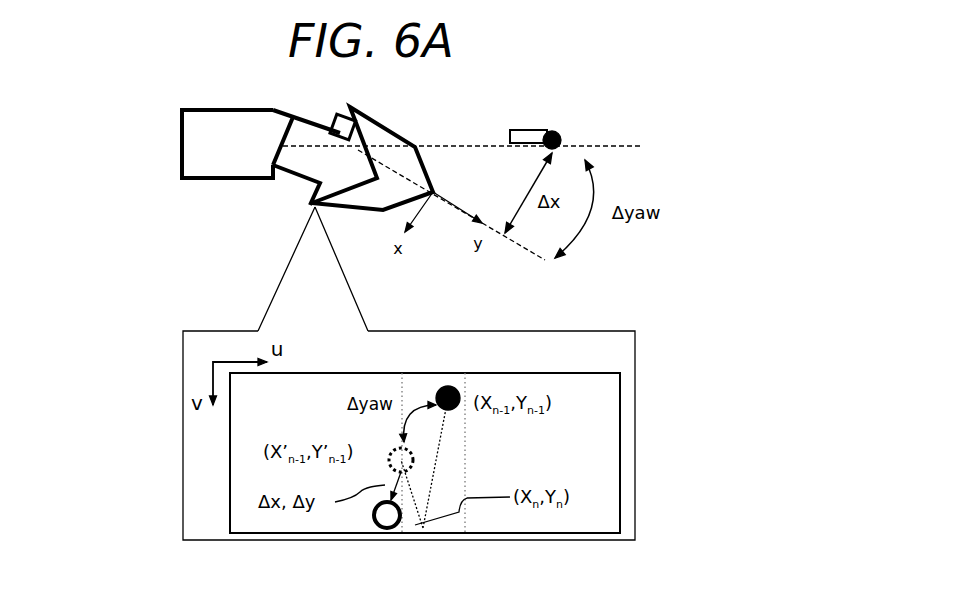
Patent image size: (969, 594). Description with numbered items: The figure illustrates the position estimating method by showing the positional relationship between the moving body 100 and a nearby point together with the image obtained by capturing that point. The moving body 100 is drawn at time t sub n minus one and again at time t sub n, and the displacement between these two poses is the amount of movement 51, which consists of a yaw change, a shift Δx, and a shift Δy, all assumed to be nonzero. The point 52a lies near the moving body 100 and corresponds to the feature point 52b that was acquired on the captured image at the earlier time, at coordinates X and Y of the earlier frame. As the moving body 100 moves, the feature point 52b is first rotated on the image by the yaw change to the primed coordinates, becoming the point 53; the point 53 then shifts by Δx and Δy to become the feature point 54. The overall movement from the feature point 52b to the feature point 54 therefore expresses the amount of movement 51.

The moving body 100 is at (181, 145).
The amount of movement 51 is at (293, 173).
The point 52a is at (562, 130).
The feature point 52b is at (449, 388).
The point 53 is at (414, 462).
The feature point 54 is at (387, 529).